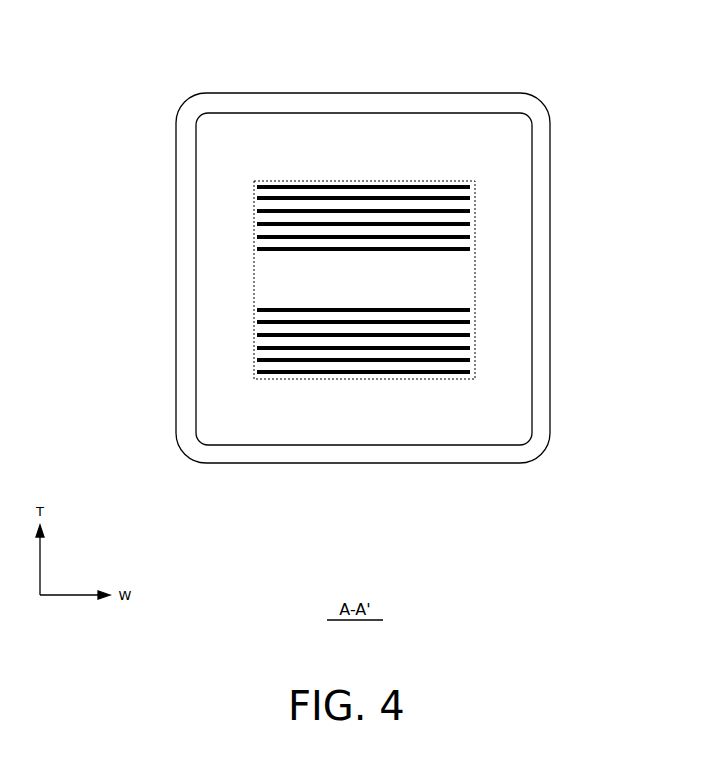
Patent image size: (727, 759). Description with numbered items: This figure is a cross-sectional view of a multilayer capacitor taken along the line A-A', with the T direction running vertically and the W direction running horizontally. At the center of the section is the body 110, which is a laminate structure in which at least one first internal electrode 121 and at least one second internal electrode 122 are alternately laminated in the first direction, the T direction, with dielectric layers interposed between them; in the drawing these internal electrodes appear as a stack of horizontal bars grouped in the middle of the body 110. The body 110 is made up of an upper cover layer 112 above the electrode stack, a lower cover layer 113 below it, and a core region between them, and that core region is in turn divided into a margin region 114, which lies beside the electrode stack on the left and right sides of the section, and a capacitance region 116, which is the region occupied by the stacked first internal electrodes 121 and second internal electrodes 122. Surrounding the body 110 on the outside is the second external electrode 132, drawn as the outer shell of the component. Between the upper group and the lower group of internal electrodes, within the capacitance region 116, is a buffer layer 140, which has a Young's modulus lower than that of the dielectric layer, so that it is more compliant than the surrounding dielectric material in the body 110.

The body 110 is at (370, 245).
The upper cover layer 112 is at (430, 120).
The lower cover layer 113 is at (400, 410).
The margin region 114 is at (513, 216).
The capacitance region 116 is at (437, 207).
The first internal electrode 121 is at (254, 186).
The second internal electrode 122 is at (304, 198).
The second external electrode 132 is at (545, 125).
The buffer layer 140 is at (450, 280).